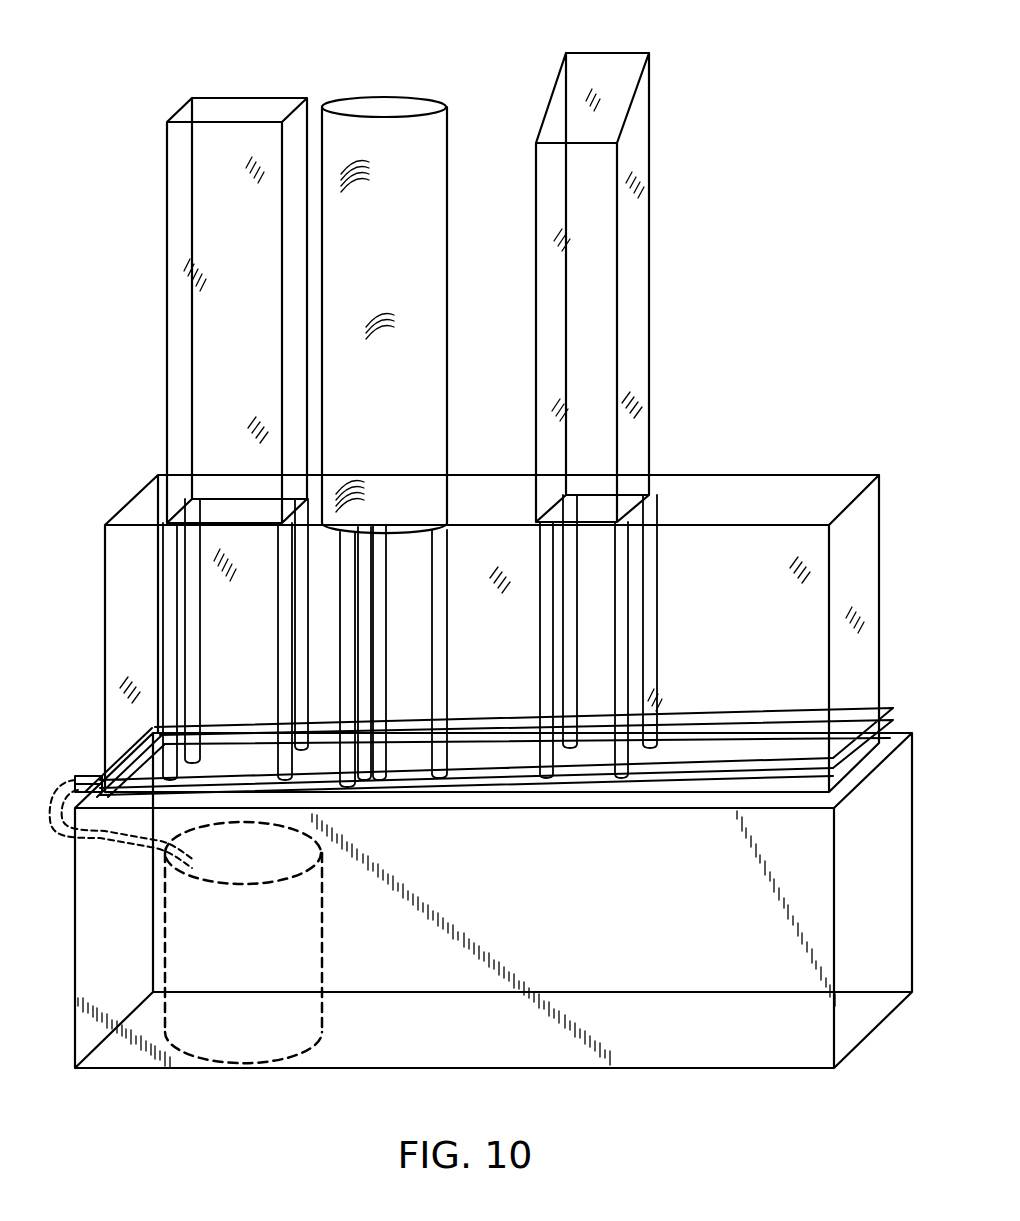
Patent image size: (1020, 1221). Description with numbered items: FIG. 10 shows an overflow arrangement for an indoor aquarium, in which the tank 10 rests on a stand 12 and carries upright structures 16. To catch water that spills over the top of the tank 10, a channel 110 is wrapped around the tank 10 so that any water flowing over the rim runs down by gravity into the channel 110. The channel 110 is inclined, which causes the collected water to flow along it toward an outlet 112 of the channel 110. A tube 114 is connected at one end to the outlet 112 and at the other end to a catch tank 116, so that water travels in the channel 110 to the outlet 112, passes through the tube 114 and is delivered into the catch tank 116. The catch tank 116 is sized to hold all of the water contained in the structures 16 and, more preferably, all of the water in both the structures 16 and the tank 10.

The tank 10 is at (783, 477).
The stand 12 is at (163, 1068).
The structure 16 is at (167, 170).
The channel 110 is at (890, 710).
The outlet 112 is at (88, 778).
The tube 114 is at (72, 778).
The catch tank 116 is at (218, 975).